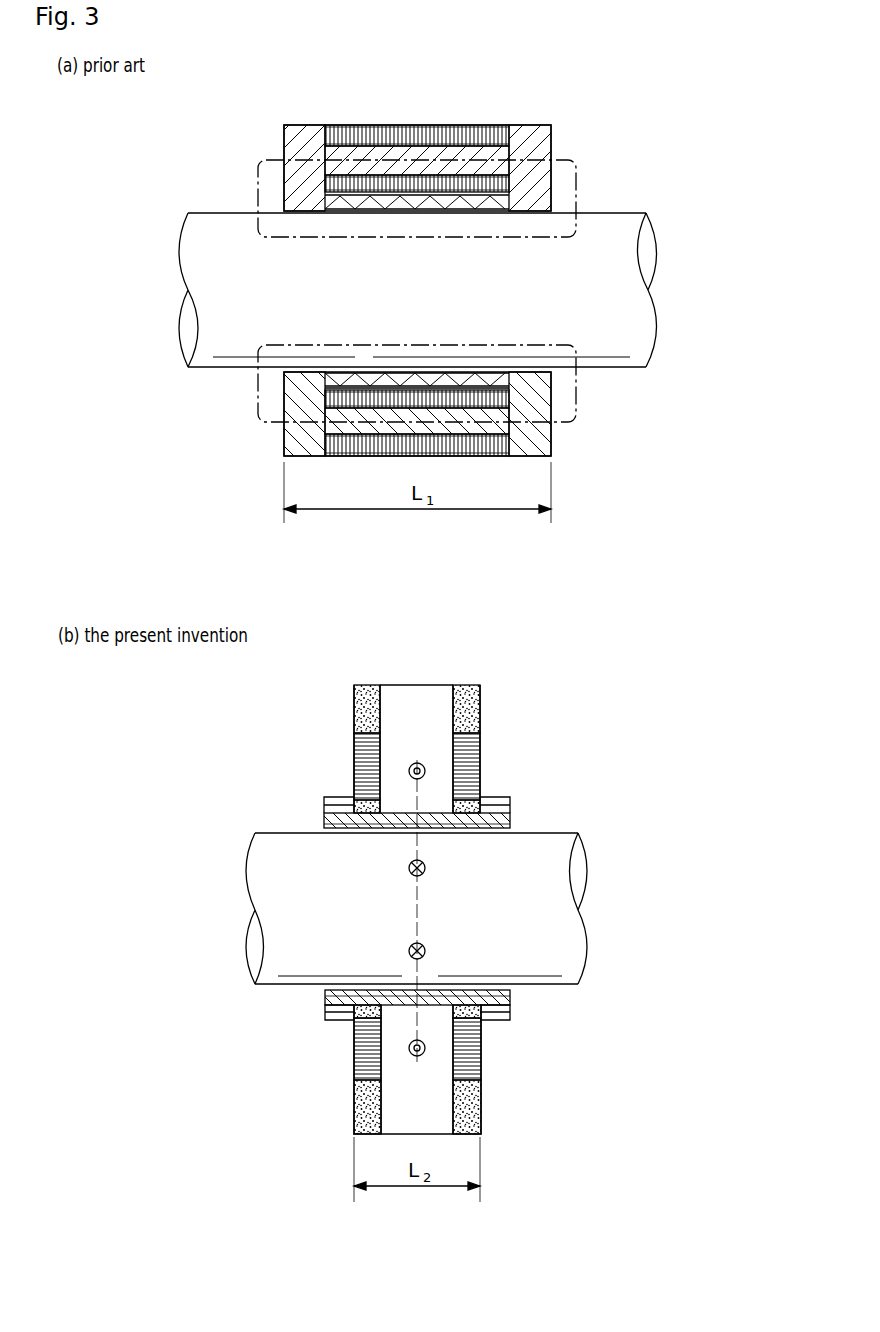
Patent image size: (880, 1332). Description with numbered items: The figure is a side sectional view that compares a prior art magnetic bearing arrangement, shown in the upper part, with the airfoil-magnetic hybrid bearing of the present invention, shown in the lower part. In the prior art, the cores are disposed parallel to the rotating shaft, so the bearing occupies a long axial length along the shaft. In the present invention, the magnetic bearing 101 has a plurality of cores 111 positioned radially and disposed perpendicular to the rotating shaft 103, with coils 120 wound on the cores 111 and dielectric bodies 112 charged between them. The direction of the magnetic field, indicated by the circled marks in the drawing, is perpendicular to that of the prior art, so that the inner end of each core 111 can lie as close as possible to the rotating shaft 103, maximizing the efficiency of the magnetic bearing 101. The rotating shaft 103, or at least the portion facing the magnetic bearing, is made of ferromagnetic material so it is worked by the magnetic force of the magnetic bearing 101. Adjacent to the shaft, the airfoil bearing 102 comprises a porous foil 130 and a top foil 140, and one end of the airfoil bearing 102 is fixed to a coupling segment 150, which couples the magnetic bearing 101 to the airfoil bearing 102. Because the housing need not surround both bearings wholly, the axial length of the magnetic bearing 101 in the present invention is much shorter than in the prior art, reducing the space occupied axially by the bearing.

The magnetic bearing 101 is at (415, 707).
The airfoil bearing 102 is at (340, 1062).
The rotating shaft 103 is at (288, 842).
The core 111 is at (397, 693).
The dielectric body 112 is at (480, 705).
The coil 120 is at (467, 693).
The porous foil 130 is at (325, 1002).
The top foil 140 is at (325, 993).
The coupling segment 150 is at (338, 800).